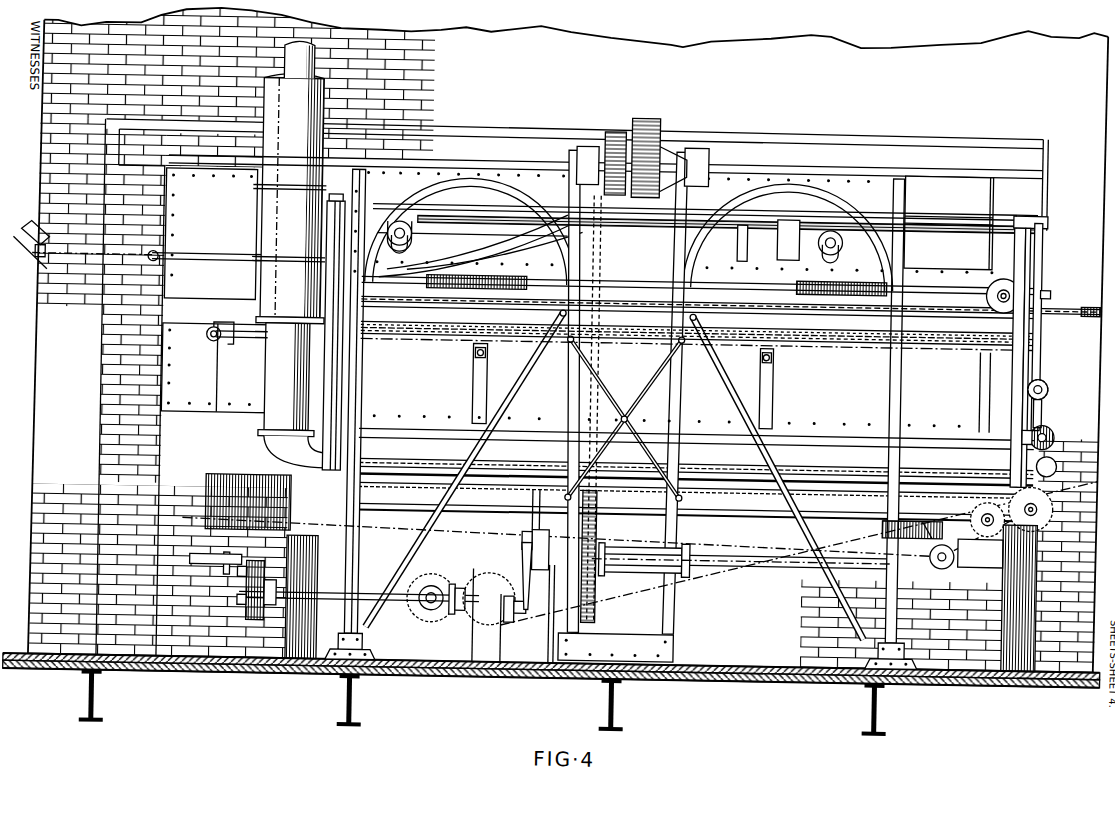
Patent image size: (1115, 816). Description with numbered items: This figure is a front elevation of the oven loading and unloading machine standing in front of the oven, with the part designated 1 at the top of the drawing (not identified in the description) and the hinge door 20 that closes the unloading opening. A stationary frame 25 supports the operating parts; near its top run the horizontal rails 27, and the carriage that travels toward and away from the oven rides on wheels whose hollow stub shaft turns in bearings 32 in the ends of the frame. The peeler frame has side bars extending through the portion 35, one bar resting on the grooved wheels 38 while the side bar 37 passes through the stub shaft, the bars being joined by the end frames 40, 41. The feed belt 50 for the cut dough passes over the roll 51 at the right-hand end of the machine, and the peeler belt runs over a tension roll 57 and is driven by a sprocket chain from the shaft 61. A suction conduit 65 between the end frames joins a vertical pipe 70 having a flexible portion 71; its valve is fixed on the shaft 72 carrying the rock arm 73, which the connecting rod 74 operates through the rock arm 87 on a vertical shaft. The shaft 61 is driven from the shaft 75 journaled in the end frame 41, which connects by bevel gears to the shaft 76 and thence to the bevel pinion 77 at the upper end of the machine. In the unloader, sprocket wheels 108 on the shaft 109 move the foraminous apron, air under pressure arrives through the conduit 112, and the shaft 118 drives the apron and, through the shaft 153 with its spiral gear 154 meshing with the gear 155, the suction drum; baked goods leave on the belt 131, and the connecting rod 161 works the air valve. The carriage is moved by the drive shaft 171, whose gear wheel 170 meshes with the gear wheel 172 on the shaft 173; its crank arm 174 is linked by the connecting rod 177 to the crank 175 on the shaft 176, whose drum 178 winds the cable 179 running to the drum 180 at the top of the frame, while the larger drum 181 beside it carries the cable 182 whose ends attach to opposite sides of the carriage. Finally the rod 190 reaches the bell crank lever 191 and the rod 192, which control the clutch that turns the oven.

The building wall 1 is at (675, 34).
The hinge door 20 is at (190, 282).
The frame 25 is at (346, 372).
The horizontal rails 27 is at (898, 184).
The bearings 32 is at (404, 222).
The portion 35 is at (770, 226).
The side bar 37 is at (480, 208).
The grooved wheels 38 is at (400, 236).
The end frame 40 is at (338, 356).
The end frame 41 is at (1030, 372).
The feed belt 50 is at (452, 518).
The roll 51 is at (1040, 512).
The tension roll 57 is at (1070, 470).
The shaft 61 is at (1051, 421).
The suction conduit 65 is at (603, 338).
The vertical pipe 70 is at (280, 370).
The flexible portion 71 is at (270, 148).
The shaft 72 is at (262, 334).
The rock arm 73 is at (252, 312).
The connecting rod 74 is at (470, 258).
The shaft 75 is at (1046, 386).
The shaft 76 is at (1036, 315).
The bevel pinion 77 is at (1042, 205).
The rock arm 87 is at (744, 244).
The sprocket wheels 108 is at (756, 310).
The shaft 109 is at (918, 302).
The conduit 112 is at (274, 51).
The shaft 118 is at (1036, 250).
The belt 131 is at (806, 338).
The shaft 153 is at (990, 285).
The spiral gear 154 is at (988, 268).
The gear 155 is at (1044, 278).
The connecting rod 161 is at (540, 240).
The gear wheel 170 is at (286, 515).
The drive shaft 171 is at (196, 550).
The gear wheel 172 is at (240, 600).
The shaft 173 is at (370, 586).
The crank arm 174 is at (542, 616).
The crank 175 is at (550, 518).
The shaft 176 is at (690, 566).
The connecting rod 177 is at (520, 558).
The drum 178 is at (596, 576).
The cable 179 is at (548, 349).
The drum 180 is at (602, 118).
The larger drum 181 is at (662, 125).
The cable 182 is at (640, 108).
The rod 190 is at (28, 262).
The bell crank lever 191 is at (22, 218).
The rod 192 is at (200, 250).